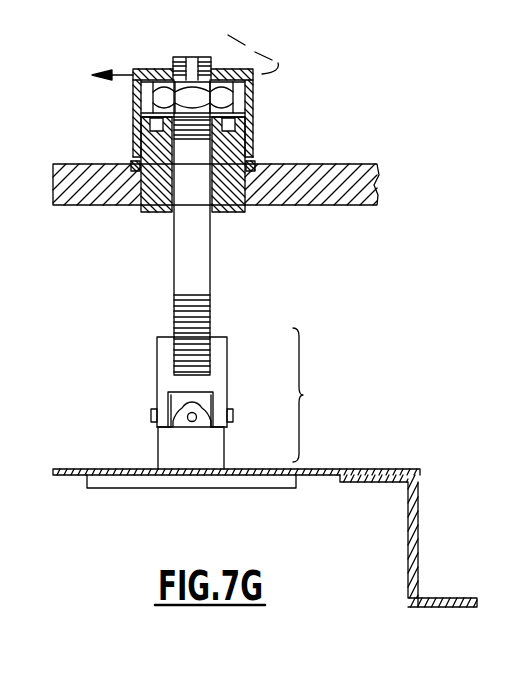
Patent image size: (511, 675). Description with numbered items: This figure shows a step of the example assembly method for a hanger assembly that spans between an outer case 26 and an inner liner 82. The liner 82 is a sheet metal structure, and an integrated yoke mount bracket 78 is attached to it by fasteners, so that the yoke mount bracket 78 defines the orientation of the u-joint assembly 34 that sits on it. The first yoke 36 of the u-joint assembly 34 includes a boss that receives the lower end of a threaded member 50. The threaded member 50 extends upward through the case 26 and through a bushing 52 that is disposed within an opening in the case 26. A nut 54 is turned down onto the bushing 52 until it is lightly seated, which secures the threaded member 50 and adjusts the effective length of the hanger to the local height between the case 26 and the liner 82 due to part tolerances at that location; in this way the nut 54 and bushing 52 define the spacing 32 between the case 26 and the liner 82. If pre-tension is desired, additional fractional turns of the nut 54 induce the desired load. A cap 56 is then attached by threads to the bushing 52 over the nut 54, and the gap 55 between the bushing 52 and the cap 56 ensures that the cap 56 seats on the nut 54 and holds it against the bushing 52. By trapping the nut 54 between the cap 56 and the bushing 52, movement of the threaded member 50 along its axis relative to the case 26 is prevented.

The case 26 is at (83, 187).
The spacing 32 is at (347, 297).
The u-joint assembly 34 is at (314, 395).
The first yoke 36 is at (218, 380).
The threaded member 50 is at (192, 253).
The bushing 52 is at (228, 188).
The nut 54 is at (220, 100).
The gap 55 is at (128, 158).
The cap 56 is at (250, 88).
The yoke mount bracket 78 is at (210, 458).
The liner 82 is at (77, 470).